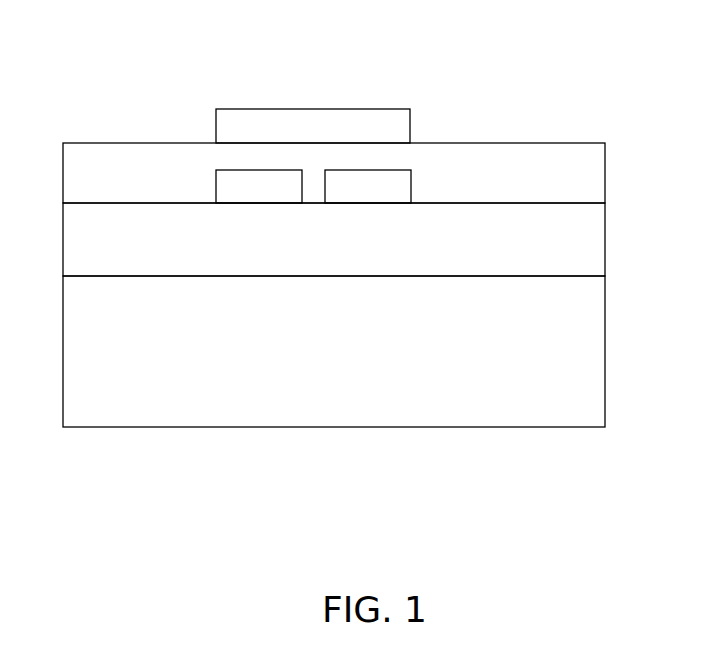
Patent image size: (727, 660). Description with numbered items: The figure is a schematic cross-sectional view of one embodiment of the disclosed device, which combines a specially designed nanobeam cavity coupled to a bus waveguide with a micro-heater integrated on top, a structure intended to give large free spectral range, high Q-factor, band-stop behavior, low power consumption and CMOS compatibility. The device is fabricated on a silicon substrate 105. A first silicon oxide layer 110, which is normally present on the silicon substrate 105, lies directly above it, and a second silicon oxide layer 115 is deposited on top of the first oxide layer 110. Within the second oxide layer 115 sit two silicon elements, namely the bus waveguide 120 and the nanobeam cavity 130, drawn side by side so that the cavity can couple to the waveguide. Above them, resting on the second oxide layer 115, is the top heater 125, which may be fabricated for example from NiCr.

The silicon substrate 105 is at (334, 351).
The first silicon oxide layer 110 is at (334, 239).
The second silicon oxide layer 115 is at (334, 173).
The bus waveguide 120 is at (236, 182).
The top heater 125 is at (374, 123).
The nanobeam cavity 130 is at (365, 183).